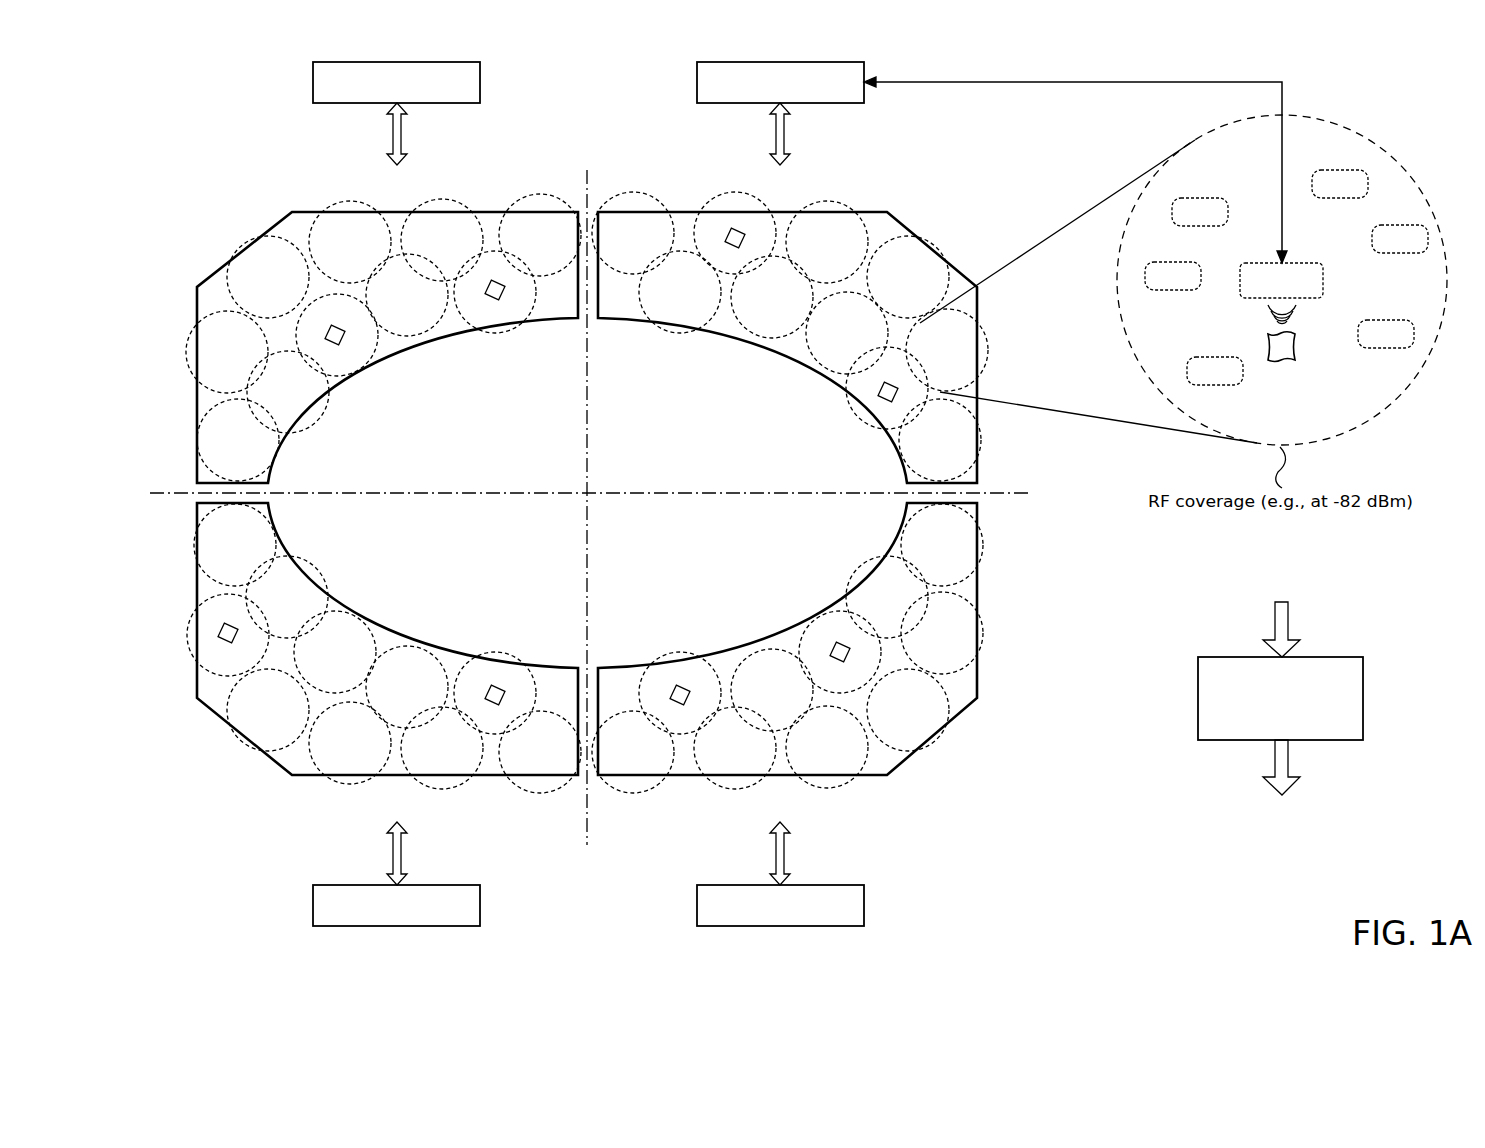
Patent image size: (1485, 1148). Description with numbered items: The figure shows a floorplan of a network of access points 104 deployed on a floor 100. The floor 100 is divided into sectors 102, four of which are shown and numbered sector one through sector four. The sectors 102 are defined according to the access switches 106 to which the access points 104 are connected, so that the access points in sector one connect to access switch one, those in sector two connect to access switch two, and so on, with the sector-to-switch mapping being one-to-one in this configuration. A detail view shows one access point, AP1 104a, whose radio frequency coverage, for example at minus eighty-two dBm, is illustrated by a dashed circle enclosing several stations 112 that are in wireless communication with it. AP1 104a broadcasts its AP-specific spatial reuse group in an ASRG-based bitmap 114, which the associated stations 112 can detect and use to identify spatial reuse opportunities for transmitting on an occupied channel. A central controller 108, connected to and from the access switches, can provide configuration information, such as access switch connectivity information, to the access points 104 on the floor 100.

The floor 100 is at (152, 193).
The sectors 102 is at (268, 230).
The access points 104 is at (236, 630).
The AP1 104a is at (1323, 281).
The access switches 106 is at (456, 99).
The central controller 108 is at (1343, 707).
The stations 112 is at (1214, 385).
The ASRG-based bitmap 114 is at (1296, 346).